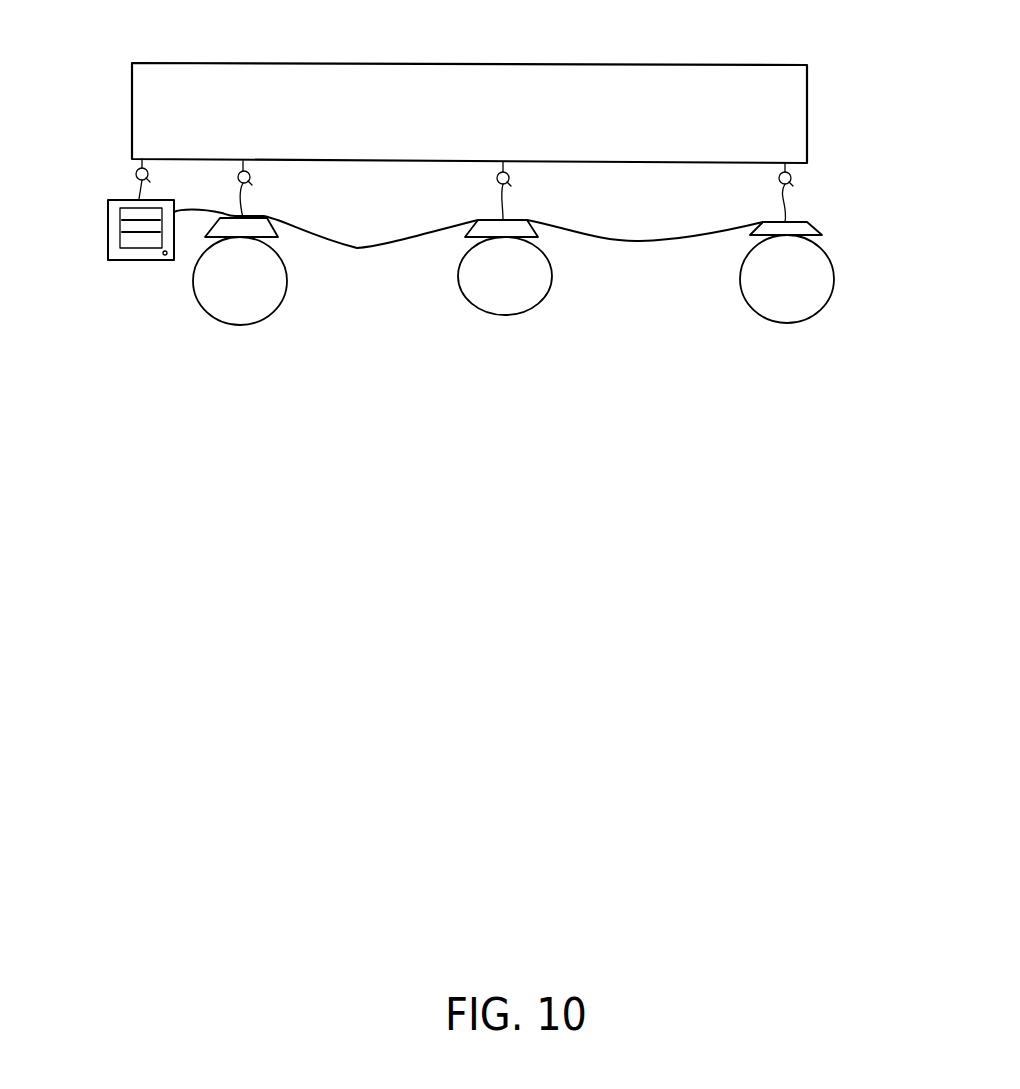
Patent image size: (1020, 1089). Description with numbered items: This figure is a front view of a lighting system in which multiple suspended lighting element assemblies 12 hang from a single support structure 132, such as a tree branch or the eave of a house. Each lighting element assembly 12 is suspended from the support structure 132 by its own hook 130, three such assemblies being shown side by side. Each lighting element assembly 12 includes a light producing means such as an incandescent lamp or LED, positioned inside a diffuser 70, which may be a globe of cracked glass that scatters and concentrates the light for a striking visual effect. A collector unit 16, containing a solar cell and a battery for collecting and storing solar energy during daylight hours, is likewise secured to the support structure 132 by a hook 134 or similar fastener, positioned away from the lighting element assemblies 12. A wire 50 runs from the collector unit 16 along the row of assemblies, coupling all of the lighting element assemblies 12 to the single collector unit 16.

The support structure 132 is at (393, 78).
The hook 134 is at (136, 189).
The hook 130 is at (245, 200).
The collector unit 16 is at (100, 256).
The wire 50 is at (384, 252).
The lighting element assembly 12 is at (529, 290).
The diffuser 70 is at (287, 284).